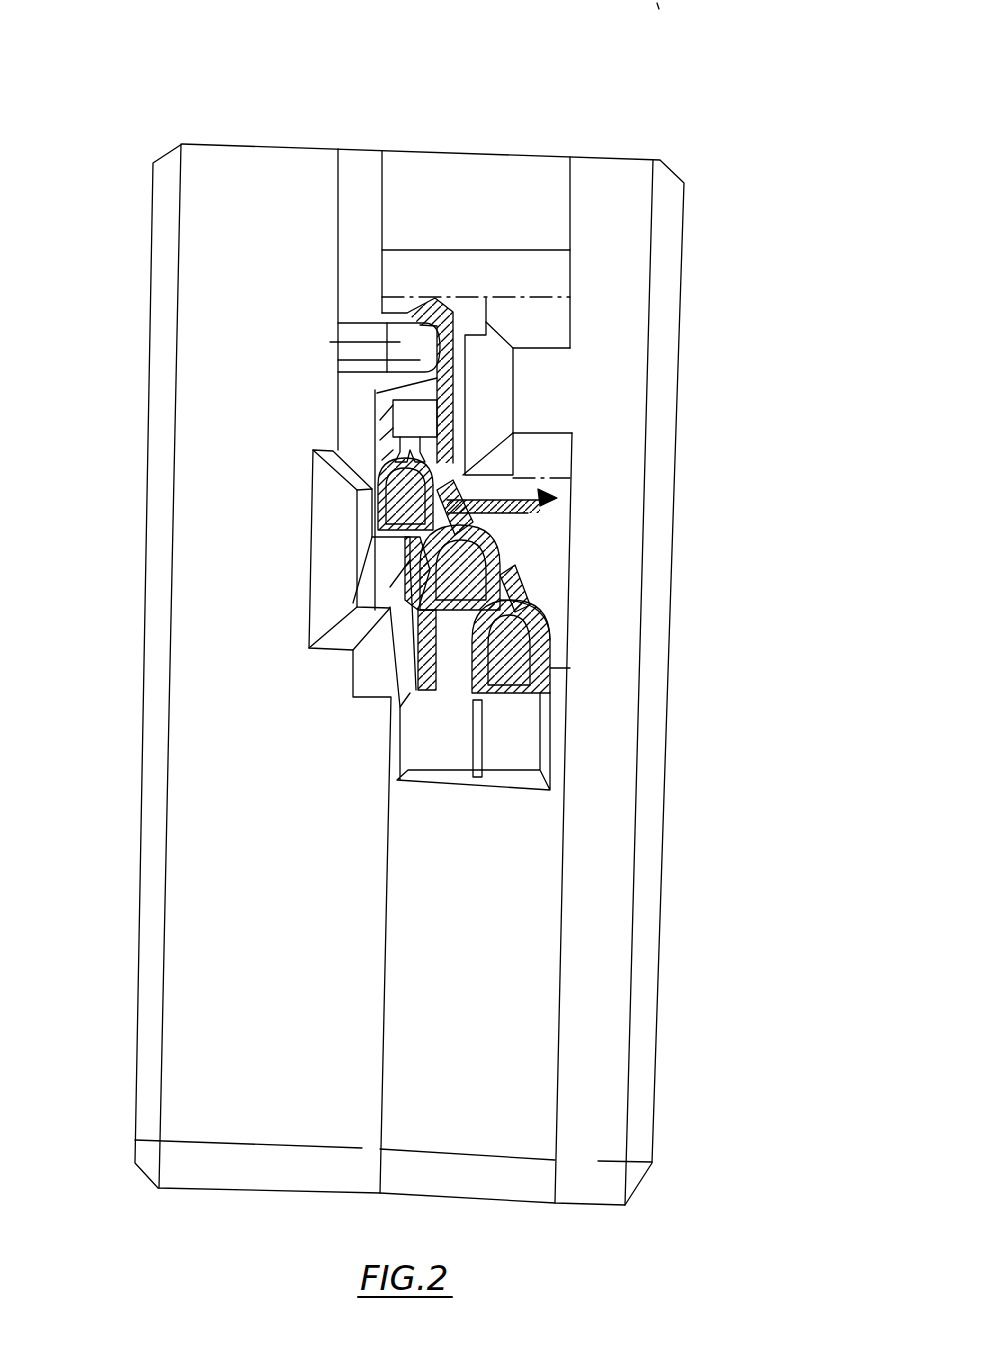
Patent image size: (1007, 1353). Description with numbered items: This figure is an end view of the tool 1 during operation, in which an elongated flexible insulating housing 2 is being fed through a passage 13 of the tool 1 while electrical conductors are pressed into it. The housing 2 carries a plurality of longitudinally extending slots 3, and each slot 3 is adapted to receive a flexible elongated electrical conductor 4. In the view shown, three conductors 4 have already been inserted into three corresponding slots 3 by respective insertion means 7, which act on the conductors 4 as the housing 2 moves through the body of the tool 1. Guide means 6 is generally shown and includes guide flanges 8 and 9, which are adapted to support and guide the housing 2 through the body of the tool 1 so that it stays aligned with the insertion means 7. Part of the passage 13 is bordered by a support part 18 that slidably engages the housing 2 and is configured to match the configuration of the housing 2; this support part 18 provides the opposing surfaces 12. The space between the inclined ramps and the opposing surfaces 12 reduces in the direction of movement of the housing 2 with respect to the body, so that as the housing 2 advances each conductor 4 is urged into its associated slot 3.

The tool 1 is at (645, 12).
The elongated flexible insulating housing 2 is at (557, 498).
The longitudinally extending slot 3 is at (545, 608).
The flexible elongated electrical conductor 4 is at (578, 670).
The guide means 6 is at (298, 591).
The insertion means 7 is at (390, 553).
The guide flange 8 is at (332, 343).
The guide flange 9 is at (490, 400).
The opposing surface 12 is at (356, 408).
The passage 13 is at (385, 767).
The support part 18 is at (545, 560).